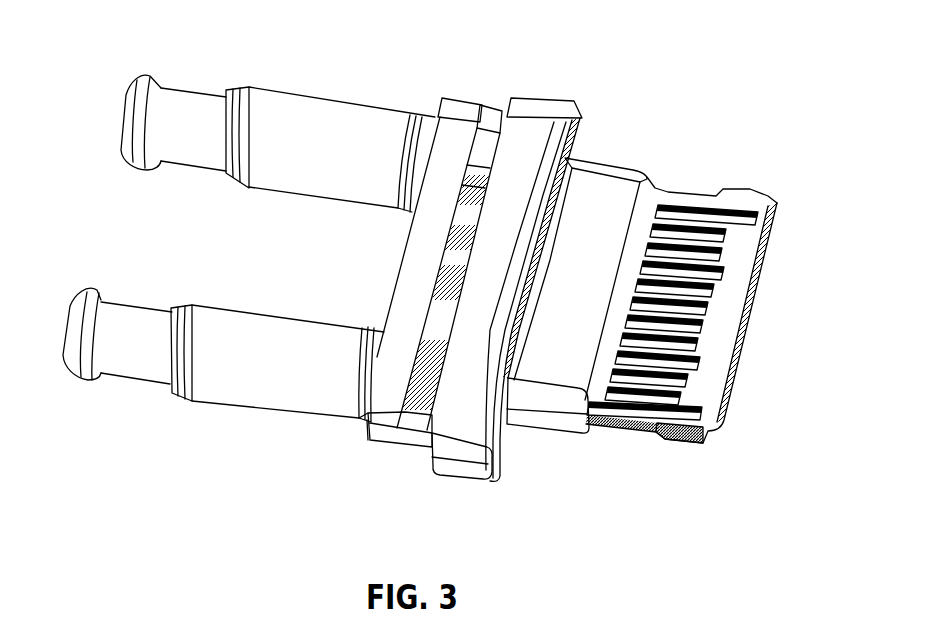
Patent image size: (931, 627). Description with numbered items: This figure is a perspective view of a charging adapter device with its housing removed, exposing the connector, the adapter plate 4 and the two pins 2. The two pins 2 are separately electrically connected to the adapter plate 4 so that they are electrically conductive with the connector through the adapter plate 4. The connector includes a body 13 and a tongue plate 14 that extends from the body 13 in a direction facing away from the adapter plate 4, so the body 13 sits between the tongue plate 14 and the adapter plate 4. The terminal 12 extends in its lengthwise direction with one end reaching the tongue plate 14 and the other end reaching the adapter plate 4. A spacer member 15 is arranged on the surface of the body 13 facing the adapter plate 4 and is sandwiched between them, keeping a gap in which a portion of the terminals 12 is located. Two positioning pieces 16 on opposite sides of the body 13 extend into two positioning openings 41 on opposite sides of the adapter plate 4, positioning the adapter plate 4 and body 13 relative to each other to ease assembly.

The pin 2 is at (348, 170).
The adapter plate 4 is at (450, 168).
The terminal 12 is at (473, 243).
The body 13 is at (468, 423).
The tongue plate 14 is at (552, 370).
The spacer member 15 is at (483, 147).
The positioning piece 16 is at (410, 440).
The positioning opening 41 is at (367, 428).